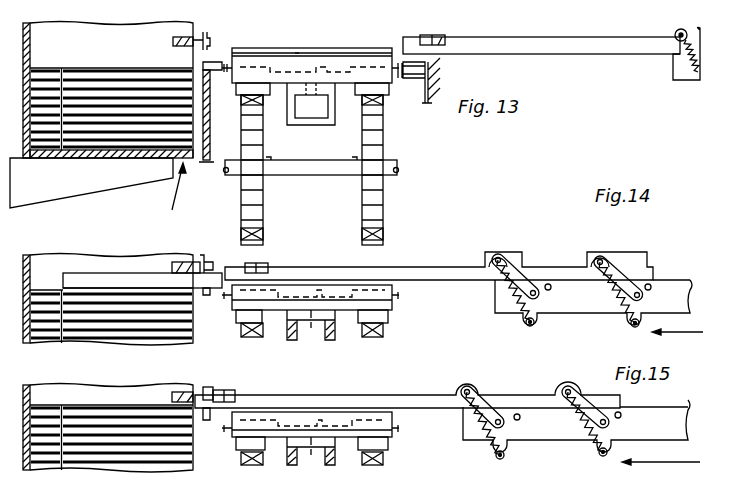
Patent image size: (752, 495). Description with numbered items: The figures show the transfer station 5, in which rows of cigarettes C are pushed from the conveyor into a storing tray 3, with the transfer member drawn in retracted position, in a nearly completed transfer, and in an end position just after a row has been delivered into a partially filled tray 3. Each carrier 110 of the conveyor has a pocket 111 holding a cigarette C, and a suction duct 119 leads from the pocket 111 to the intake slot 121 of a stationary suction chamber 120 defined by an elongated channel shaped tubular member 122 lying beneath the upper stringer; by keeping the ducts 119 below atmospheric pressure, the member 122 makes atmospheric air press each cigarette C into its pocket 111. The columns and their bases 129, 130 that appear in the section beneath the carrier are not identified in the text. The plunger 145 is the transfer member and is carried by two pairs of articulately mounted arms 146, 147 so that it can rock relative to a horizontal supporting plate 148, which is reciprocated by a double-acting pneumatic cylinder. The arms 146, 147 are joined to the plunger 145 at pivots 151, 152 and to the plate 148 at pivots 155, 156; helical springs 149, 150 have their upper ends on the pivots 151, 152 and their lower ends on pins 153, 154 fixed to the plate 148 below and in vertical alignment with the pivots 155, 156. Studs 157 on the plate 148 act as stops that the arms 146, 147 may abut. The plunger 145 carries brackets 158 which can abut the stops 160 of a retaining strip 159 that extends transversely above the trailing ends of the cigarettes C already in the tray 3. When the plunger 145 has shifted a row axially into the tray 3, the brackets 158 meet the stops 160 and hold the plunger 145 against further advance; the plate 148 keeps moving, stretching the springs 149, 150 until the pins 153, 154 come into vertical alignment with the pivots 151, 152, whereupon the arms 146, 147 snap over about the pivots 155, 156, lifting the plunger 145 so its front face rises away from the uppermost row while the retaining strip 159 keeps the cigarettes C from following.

In FIG. 13, the tray 3 is at (31, 62).
In FIG. 14, the tray 3 is at (30, 257).
In FIG. 15, the tray 3 is at (108, 428).
In FIG. 13, the transfer station 5 is at (171, 196).
In FIG. 13, the cigarettes C is at (297, 53).
In FIG. 13, the carrier 110 is at (268, 68).
In FIG. 14, the carrier 110 is at (310, 304).
In FIG. 15, the carrier 110 is at (276, 426).
In FIG. 13, the pocket 111 is at (364, 62).
In FIG. 13, the suction duct 119 is at (322, 66).
In FIG. 13, the suction chamber 120 is at (305, 122).
In FIG. 13, the intake slot 121 is at (313, 95).
In FIG. 13, the tubular member 122 is at (335, 108).
In FIG. 14, the tubular member 122 is at (318, 330).
In FIG. 15, the tubular member 122 is at (300, 464).
In FIG. 13, the column base 129 is at (263, 233).
In FIG. 14, the column base 129 is at (312, 330).
In FIG. 15, the column base 129 is at (312, 458).
In FIG. 13, the column 130 is at (263, 194).
In FIG. 13, the plunger 145 is at (506, 46).
In FIG. 14, the plunger 145 is at (427, 267).
In FIG. 15, the plunger 145 is at (352, 398).
In FIG. 13, the arm 146 is at (675, 36).
In FIG. 14, the arm 146 is at (522, 264).
In FIG. 15, the arm 146 is at (497, 416).
In FIG. 14, the arm 147 is at (624, 270).
In FIG. 15, the arm 147 is at (595, 394).
In FIG. 14, the supporting plate 148 is at (583, 305).
In FIG. 15, the supporting plate 148 is at (471, 433).
In FIG. 14, the helical spring 149 is at (497, 297).
In FIG. 14, the helical spring 150 is at (632, 326).
In FIG. 15, the helical spring 150 is at (611, 451).
In FIG. 14, the pivot 151 is at (497, 256).
In FIG. 15, the pivot 151 is at (466, 389).
In FIG. 14, the pivot 152 is at (601, 256).
In FIG. 15, the pivot 152 is at (567, 389).
In FIG. 15, the pin 153 is at (494, 453).
In FIG. 15, the pin 154 is at (598, 450).
In FIG. 14, the pivot 155 is at (536, 289).
In FIG. 15, the pivot 155 is at (501, 418).
In FIG. 14, the pivot 156 is at (641, 278).
In FIG. 15, the pivot 156 is at (607, 426).
In FIG. 14, the stud 157 is at (652, 284).
In FIG. 15, the stud 157 is at (621, 412).
In FIG. 13, the bracket 158 is at (440, 36).
In FIG. 14, the bracket 158 is at (260, 265).
In FIG. 15, the bracket 158 is at (235, 392).
In FIG. 15, the retaining strip 159 is at (178, 391).
In FIG. 15, the stop 160 is at (207, 387).